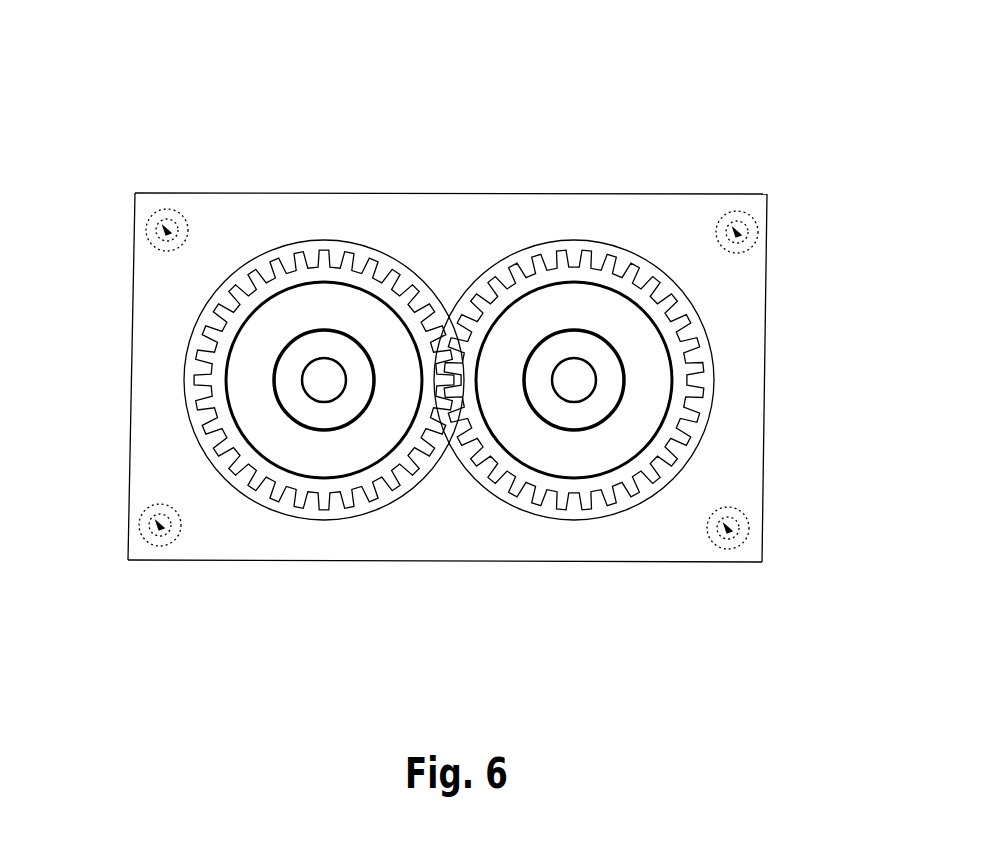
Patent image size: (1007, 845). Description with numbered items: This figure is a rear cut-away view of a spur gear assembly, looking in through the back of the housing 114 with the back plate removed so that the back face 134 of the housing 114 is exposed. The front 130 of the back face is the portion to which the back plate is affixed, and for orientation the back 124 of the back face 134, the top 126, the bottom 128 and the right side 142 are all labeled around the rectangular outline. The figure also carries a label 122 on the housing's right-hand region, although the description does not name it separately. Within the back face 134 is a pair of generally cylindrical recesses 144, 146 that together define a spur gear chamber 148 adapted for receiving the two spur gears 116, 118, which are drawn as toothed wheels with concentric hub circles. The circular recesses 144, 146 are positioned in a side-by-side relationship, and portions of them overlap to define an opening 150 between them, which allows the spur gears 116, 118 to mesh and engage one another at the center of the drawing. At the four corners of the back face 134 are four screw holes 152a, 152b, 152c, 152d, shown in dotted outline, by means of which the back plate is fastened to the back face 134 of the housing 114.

The housing 114 is at (197, 111).
The spur gear 116 is at (316, 478).
The spur gear 118 is at (596, 478).
The mounting plate 122 is at (461, 397).
The back of the back face 124 is at (689, 247).
The top 126 is at (766, 397).
The bottom 128 is at (129, 420).
The front of the back face 130 is at (542, 540).
The back face 134 is at (450, 545).
The right side 142 is at (369, 563).
The cylindrical recess 144 is at (575, 250).
The cylindrical recess 146 is at (287, 256).
The spur gear chamber 148 is at (475, 465).
The opening 150 is at (452, 321).
The screw hole 152a is at (757, 205).
The screw hole 152b is at (738, 570).
The screw hole 152c is at (155, 200).
The screw hole 152d is at (143, 565).